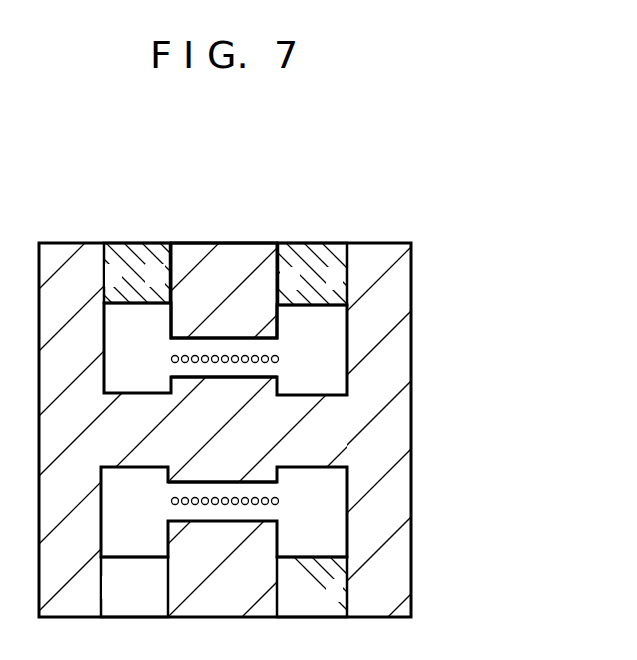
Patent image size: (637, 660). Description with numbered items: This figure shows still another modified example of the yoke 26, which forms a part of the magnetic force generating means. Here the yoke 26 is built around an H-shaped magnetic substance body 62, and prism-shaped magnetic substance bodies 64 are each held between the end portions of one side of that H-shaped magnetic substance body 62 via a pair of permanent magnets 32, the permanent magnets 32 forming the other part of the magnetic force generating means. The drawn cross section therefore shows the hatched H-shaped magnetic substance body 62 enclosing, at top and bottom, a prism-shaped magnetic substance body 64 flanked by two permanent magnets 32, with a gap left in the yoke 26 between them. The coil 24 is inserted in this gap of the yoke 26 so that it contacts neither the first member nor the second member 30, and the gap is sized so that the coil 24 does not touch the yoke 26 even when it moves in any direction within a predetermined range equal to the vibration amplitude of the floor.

The yoke 26 is at (79, 236).
The H-shaped magnetic substance body 62 is at (392, 417).
The prism-shaped magnetic substance body 64 is at (228, 261).
The permanent magnet 32 is at (317, 241).
The coil 24 is at (282, 360).
The second member 30 is at (185, 377).